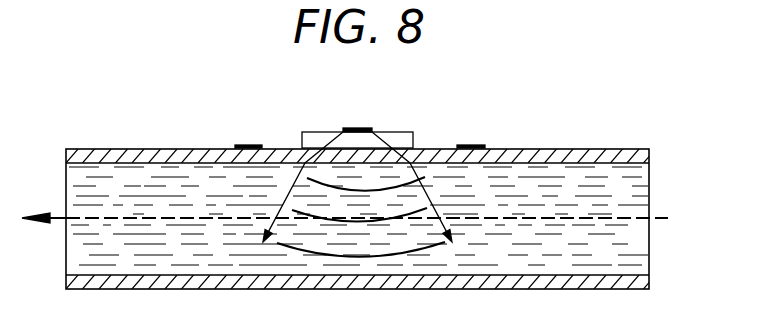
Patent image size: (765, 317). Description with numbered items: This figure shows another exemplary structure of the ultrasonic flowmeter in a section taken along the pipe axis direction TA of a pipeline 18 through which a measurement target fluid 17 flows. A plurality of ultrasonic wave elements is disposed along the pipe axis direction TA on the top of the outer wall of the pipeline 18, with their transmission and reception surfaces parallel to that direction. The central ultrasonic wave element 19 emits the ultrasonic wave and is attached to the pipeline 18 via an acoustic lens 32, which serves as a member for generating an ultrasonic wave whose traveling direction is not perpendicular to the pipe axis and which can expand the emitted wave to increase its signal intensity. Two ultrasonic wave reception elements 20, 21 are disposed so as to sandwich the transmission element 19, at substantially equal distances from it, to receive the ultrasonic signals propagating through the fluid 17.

The measurement target fluid 17 is at (637, 246).
The pipeline 18 is at (632, 148).
The ultrasonic wave element 19 is at (356, 128).
The ultrasonic wave reception element 20 is at (247, 145).
The ultrasonic wave reception element 21 is at (471, 145).
The acoustic lens 32 is at (401, 132).
The pipe axis direction TA is at (58, 221).